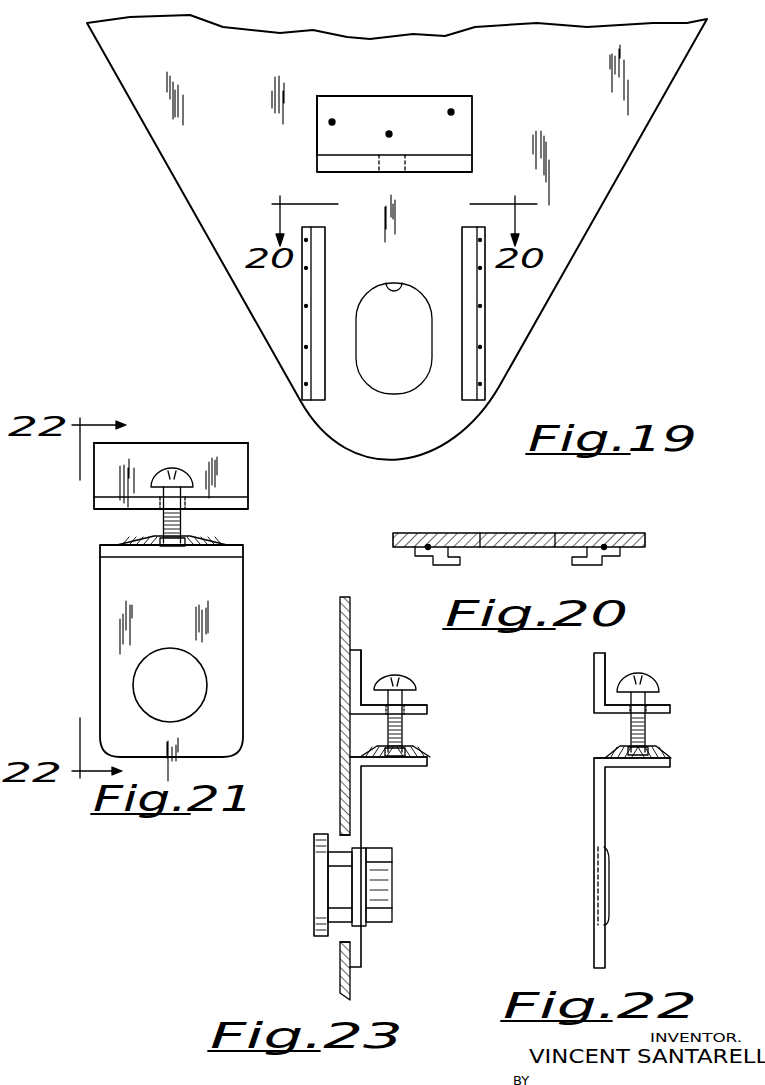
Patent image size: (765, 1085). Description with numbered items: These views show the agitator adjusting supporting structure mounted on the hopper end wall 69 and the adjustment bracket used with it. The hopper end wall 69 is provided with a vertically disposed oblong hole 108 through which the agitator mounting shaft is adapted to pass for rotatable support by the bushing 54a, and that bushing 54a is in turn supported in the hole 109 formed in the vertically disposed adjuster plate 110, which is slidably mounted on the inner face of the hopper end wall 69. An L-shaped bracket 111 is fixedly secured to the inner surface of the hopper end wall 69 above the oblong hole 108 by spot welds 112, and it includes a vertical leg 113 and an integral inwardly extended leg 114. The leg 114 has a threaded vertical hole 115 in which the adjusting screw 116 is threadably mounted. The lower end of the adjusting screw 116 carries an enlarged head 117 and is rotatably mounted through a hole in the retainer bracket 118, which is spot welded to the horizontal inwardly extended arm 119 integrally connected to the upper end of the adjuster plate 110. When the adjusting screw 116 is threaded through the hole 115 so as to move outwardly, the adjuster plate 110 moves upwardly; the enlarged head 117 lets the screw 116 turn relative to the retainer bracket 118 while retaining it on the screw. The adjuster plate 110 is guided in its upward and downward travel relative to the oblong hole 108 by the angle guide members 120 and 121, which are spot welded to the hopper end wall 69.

In FIG. 19, the hopper end wall 69 is at (600, 168).
In FIG. 20, the hopper end wall 69 is at (580, 540).
In FIG. 23, the hopper end wall 69 is at (340, 632).
In FIG. 19, the oblong hole 108 is at (398, 288).
In FIG. 20, the oblong hole 108 is at (486, 532).
In FIG. 23, the oblong hole 108 is at (340, 838).
In FIG. 21, the hole 109 is at (193, 660).
In FIG. 23, the hole 109 is at (388, 869).
In FIG. 22, the hole 109 is at (606, 856).
In FIG. 21, the adjuster plate 110 is at (232, 598).
In FIG. 23, the adjuster plate 110 is at (355, 808).
In FIG. 22, the adjuster plate 110 is at (600, 813).
In FIG. 19, the L-shaped bracket 111 is at (462, 134).
In FIG. 21, the L-shaped bracket 111 is at (248, 479).
In FIG. 23, the L-shaped bracket 111 is at (359, 650).
In FIG. 22, the L-shaped bracket 111 is at (594, 665).
In FIG. 19, the spot welds 112 is at (332, 120).
In FIG. 19, the vertical leg 113 is at (470, 147).
In FIG. 21, the vertical leg 113 is at (205, 452).
In FIG. 23, the vertical leg 113 is at (357, 668).
In FIG. 22, the vertical leg 113 is at (603, 671).
In FIG. 19, the inwardly extended leg 114 is at (470, 164).
In FIG. 21, the inwardly extended leg 114 is at (250, 500).
In FIG. 23, the inwardly extended leg 114 is at (426, 708).
In FIG. 22, the inwardly extended leg 114 is at (670, 710).
In FIG. 19, the vertical hole 115 is at (397, 175).
In FIG. 21, the vertical hole 115 is at (160, 508).
In FIG. 23, the vertical hole 115 is at (405, 712).
In FIG. 22, the vertical hole 115 is at (630, 718).
In FIG. 21, the adjusting screw 116 is at (156, 477).
In FIG. 23, the adjusting screw 116 is at (402, 678).
In FIG. 22, the adjusting screw 116 is at (646, 678).
In FIG. 21, the enlarged head 117 is at (176, 548).
In FIG. 23, the enlarged head 117 is at (397, 758).
In FIG. 22, the enlarged head 117 is at (644, 767).
In FIG. 21, the retainer bracket 118 is at (225, 538).
In FIG. 23, the retainer bracket 118 is at (425, 752).
In FIG. 22, the retainer bracket 118 is at (662, 756).
In FIG. 21, the horizontal inwardly extended arm 119 is at (240, 552).
In FIG. 23, the horizontal inwardly extended arm 119 is at (430, 763).
In FIG. 22, the horizontal inwardly extended arm 119 is at (672, 764).
In FIG. 19, the angle guide member 120 is at (310, 292).
In FIG. 20, the angle guide member 120 is at (438, 566).
In FIG. 19, the angle guide member 121 is at (472, 296).
In FIG. 20, the angle guide member 121 is at (590, 566).
In FIG. 23, the bushing 54a is at (315, 930).